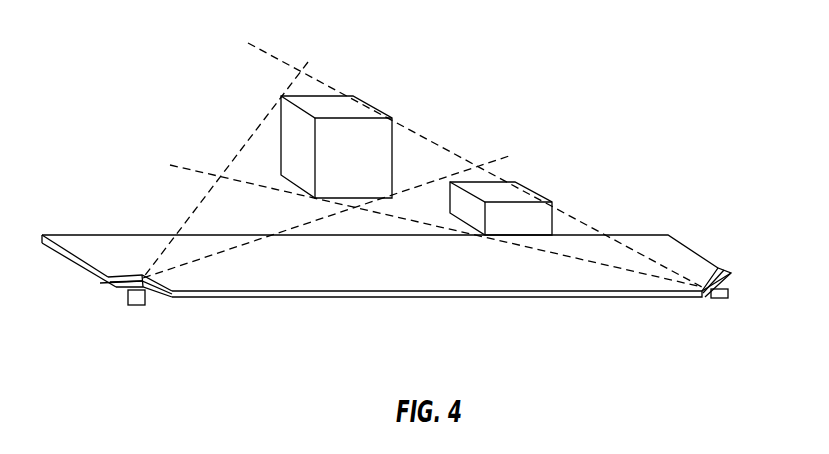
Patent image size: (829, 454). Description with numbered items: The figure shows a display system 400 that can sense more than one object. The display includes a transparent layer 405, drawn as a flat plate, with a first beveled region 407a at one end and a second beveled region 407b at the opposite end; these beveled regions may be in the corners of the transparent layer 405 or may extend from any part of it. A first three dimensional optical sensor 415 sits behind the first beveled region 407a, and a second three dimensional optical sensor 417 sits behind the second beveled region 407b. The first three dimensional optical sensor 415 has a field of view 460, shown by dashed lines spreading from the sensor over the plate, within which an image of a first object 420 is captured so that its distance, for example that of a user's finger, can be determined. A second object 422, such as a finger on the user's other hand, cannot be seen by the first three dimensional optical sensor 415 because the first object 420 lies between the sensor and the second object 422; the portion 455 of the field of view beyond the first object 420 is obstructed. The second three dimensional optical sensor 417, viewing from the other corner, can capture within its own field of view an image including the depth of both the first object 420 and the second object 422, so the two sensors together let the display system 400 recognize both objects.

The display system 400 is at (631, 90).
The transparent layer 405 is at (700, 298).
The first beveled region 407a is at (730, 271).
The second beveled region 407b is at (100, 283).
The first three dimensional optical sensor 415 is at (728, 298).
The second three dimensional optical sensor 417 is at (137, 305).
The first object 420 is at (549, 217).
The second object 422 is at (393, 142).
The obstructed portion of the field of view 455 is at (635, 263).
The field of view 460 is at (322, 82).